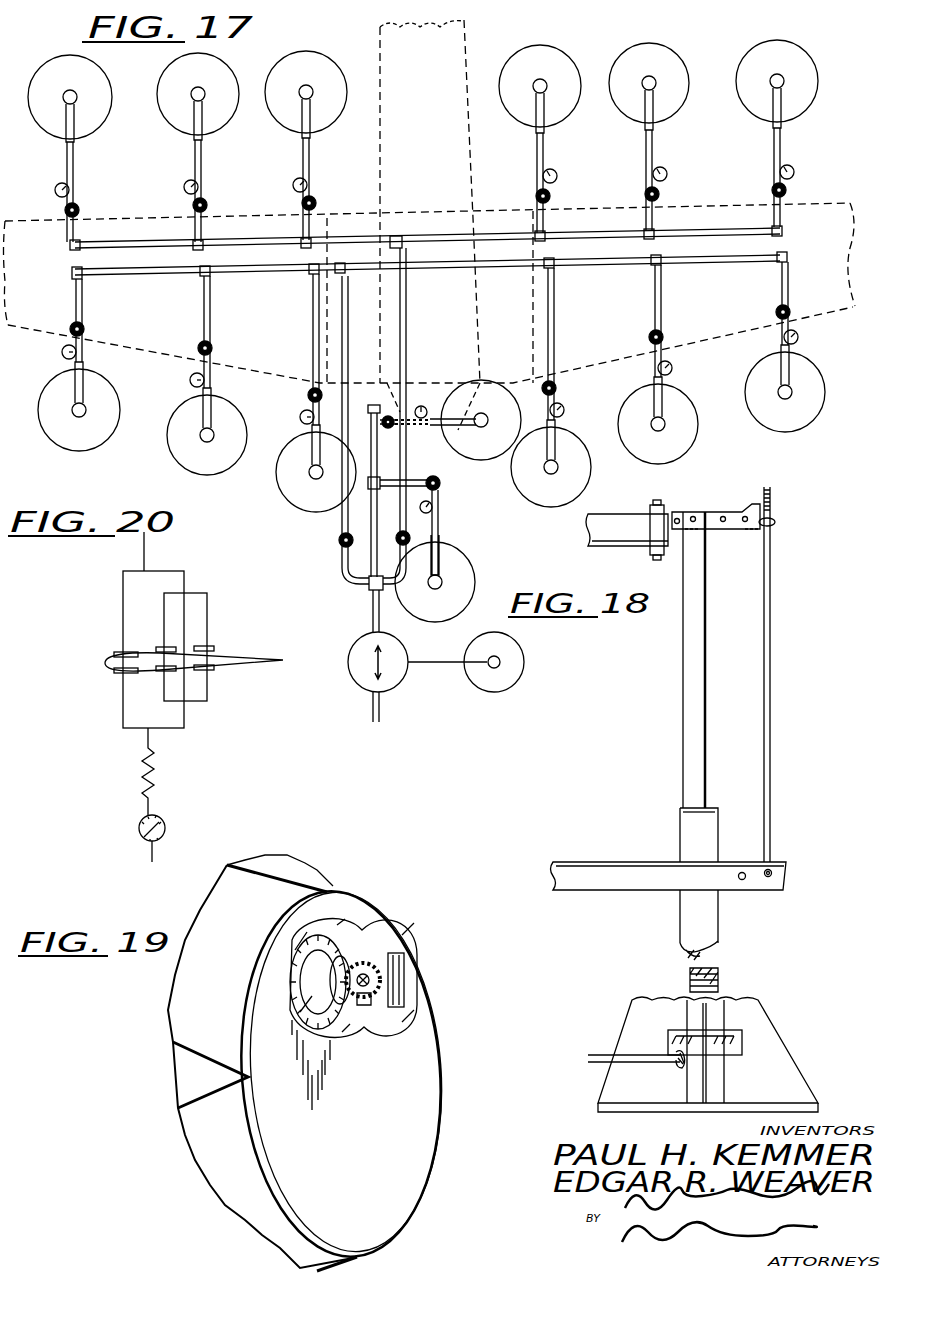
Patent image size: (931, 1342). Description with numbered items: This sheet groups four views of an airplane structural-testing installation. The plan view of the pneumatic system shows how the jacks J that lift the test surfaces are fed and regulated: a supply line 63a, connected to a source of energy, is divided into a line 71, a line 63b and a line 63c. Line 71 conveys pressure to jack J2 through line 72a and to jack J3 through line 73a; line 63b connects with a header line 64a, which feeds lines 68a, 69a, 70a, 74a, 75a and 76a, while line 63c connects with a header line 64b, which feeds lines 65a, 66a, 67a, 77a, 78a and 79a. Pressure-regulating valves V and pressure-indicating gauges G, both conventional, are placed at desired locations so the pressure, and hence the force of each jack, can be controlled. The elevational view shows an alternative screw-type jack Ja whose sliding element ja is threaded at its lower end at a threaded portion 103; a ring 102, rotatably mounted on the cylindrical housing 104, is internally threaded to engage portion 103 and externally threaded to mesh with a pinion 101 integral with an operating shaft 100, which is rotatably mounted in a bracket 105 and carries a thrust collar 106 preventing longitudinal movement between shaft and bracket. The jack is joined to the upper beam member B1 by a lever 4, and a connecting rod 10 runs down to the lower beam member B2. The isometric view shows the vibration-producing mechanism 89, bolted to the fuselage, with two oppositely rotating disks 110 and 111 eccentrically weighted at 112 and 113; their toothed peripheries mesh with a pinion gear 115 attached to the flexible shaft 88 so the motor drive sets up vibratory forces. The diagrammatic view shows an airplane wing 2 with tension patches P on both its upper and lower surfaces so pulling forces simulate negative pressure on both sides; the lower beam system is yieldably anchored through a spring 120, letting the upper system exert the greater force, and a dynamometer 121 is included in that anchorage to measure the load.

In FIG. 17, the jack J is at (68, 64).
In FIG. 17, the line 67a is at (76, 161).
In FIG. 17, the line 66a is at (203, 161).
In FIG. 17, the line 65a is at (312, 158).
In FIG. 17, the line 79a is at (545, 156).
In FIG. 17, the line 78a is at (655, 157).
In FIG. 17, the line 77a is at (782, 150).
In FIG. 17, the pressure indicating gauge G is at (55, 190).
In FIG. 17, the pressure-regulating valve V is at (80, 208).
In FIG. 17, the line 64b is at (255, 252).
In FIG. 17, the line 64a is at (246, 282).
In FIG. 17, the line 68a is at (83, 303).
In FIG. 17, the line 69a is at (211, 316).
In FIG. 17, the line 70a is at (312, 338).
In FIG. 17, the line 74a is at (556, 316).
In FIG. 17, the line 75a is at (663, 303).
In FIG. 17, the line 76a is at (790, 278).
In FIG. 17, the line 63b is at (347, 320).
In FIG. 17, the line 63c is at (406, 326).
In FIG. 17, the line 63a is at (372, 596).
In FIG. 17, the line 71 is at (368, 498).
In FIG. 17, the line 73a is at (431, 424).
In FIG. 17, the line 72a is at (424, 483).
In FIG. 17, the jack J3 is at (480, 460).
In FIG. 17, the jack J2 is at (475, 585).
In FIG. 20, the airplane wing 2 is at (228, 656).
In FIG. 20, the tension patch P is at (138, 648).
In FIG. 20, the spring 120 is at (155, 765).
In FIG. 20, the dynamometer 121 is at (160, 818).
In FIG. 18, the upper beam member B1 is at (634, 548).
In FIG. 18, the lever 4 is at (725, 538).
In FIG. 18, the sliding element ja is at (683, 728).
In FIG. 18, the connecting rod 10 is at (772, 686).
In FIG. 18, the cylindrical housing 104 is at (718, 915).
In FIG. 18, the lower beam member B2 is at (606, 892).
In FIG. 18, the threaded portion 103 is at (720, 982).
In FIG. 18, the ring 102 is at (765, 1032).
In FIG. 18, the screw-type jack Ja is at (642, 1008).
In FIG. 18, the pinion 101 is at (708, 1060).
In FIG. 18, the thrust collar 106 is at (668, 1046).
In FIG. 18, the operating shaft 100 is at (606, 1058).
In FIG. 18, the bracket 105 is at (674, 1073).
In FIG. 19, the flexible shaft 88 is at (364, 996).
In FIG. 19, the eccentric weight 113 is at (332, 939).
In FIG. 19, the rotating disk 111 is at (350, 946).
In FIG. 19, the vibration-producing mechanism 89 is at (376, 928).
In FIG. 19, the rotating disk 110 is at (384, 955).
In FIG. 19, the eccentric weight 112 is at (404, 966).
In FIG. 19, the pinion gear 115 is at (370, 1005).